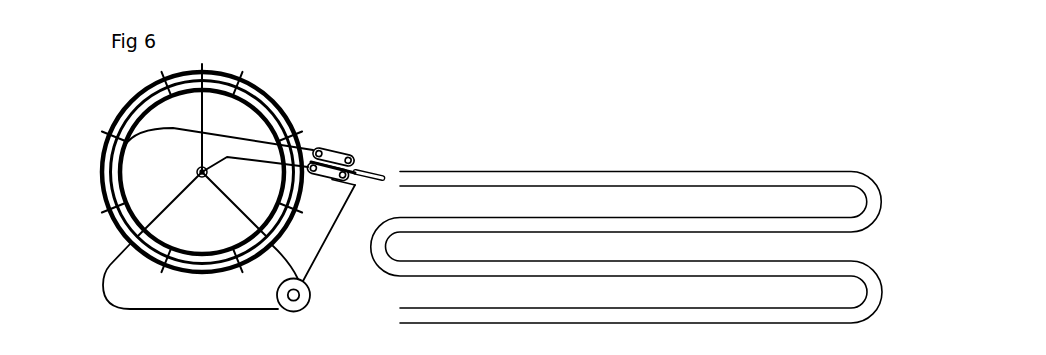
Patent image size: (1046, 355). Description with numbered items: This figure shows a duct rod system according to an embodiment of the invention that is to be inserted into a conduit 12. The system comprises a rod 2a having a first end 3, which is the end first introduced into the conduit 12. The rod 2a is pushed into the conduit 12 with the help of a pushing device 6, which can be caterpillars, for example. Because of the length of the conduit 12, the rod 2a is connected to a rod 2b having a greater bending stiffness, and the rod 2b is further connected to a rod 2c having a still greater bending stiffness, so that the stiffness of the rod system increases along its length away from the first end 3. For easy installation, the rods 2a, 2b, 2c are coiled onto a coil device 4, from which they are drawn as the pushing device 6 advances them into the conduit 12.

The rod 2a is at (281, 124).
The rod 2b is at (257, 156).
The rod 2c is at (171, 172).
The first end 3 is at (419, 160).
The coil device 4 is at (191, 248).
The pushing device 6 is at (337, 150).
The conduit 12 is at (626, 218).